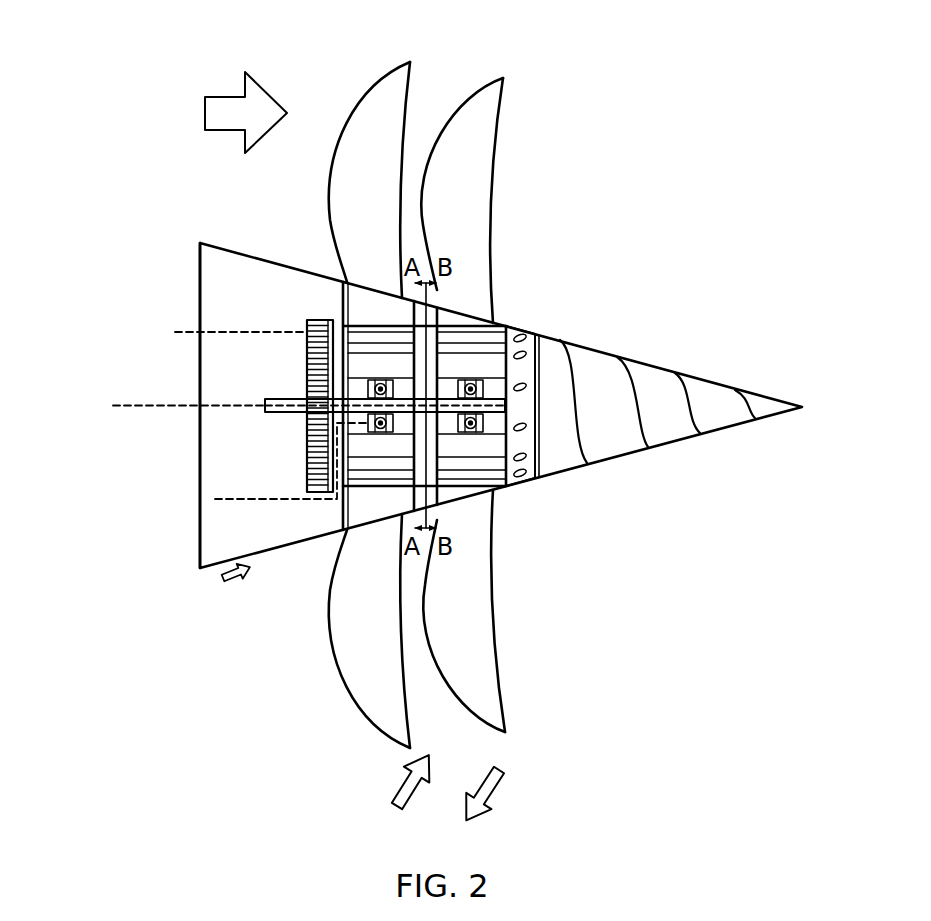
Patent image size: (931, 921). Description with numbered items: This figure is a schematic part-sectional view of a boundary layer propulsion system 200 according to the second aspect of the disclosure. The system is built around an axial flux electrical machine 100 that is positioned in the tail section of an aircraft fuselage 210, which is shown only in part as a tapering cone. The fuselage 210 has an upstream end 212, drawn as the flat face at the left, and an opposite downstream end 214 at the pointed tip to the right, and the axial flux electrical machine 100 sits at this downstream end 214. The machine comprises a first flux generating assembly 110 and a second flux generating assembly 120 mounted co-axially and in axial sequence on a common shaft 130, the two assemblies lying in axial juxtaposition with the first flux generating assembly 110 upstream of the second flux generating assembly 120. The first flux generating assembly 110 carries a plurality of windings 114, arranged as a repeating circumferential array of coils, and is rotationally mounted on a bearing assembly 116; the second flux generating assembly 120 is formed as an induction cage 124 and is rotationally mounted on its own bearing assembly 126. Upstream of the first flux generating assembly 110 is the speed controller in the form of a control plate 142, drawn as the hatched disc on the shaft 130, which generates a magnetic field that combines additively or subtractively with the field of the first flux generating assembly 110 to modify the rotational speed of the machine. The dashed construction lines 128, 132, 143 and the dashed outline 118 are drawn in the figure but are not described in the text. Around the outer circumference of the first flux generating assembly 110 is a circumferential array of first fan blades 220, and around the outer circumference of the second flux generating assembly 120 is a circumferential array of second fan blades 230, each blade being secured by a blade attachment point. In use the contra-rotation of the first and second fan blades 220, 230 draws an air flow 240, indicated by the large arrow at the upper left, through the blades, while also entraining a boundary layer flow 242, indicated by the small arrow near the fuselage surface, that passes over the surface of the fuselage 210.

The axial flow electrical machine 100 is at (284, 465).
The first flux generating assembly 110 is at (373, 466).
The windings 114 is at (359, 366).
The bearing assembly 116 is at (382, 378).
The controller 118 is at (233, 502).
The second flux generating assembly 120 is at (499, 472).
The induction cage 124 is at (498, 367).
The bearing assembly 126 is at (505, 327).
The rotational axis 128 is at (122, 405).
The shaft 130 is at (283, 402).
The shaft axis 132 is at (223, 407).
The control plate 142 is at (313, 327).
The gear axis 143 is at (183, 332).
The boundary layer propulsion system 200 is at (763, 237).
The fuselage 210 is at (258, 560).
The upstream end 212 is at (203, 573).
The downstream end 214 is at (773, 391).
The first fan blades 220 is at (408, 61).
The second fan blades 230 is at (505, 97).
The air flow 240 is at (220, 95).
The boundary layer flow 242 is at (235, 585).